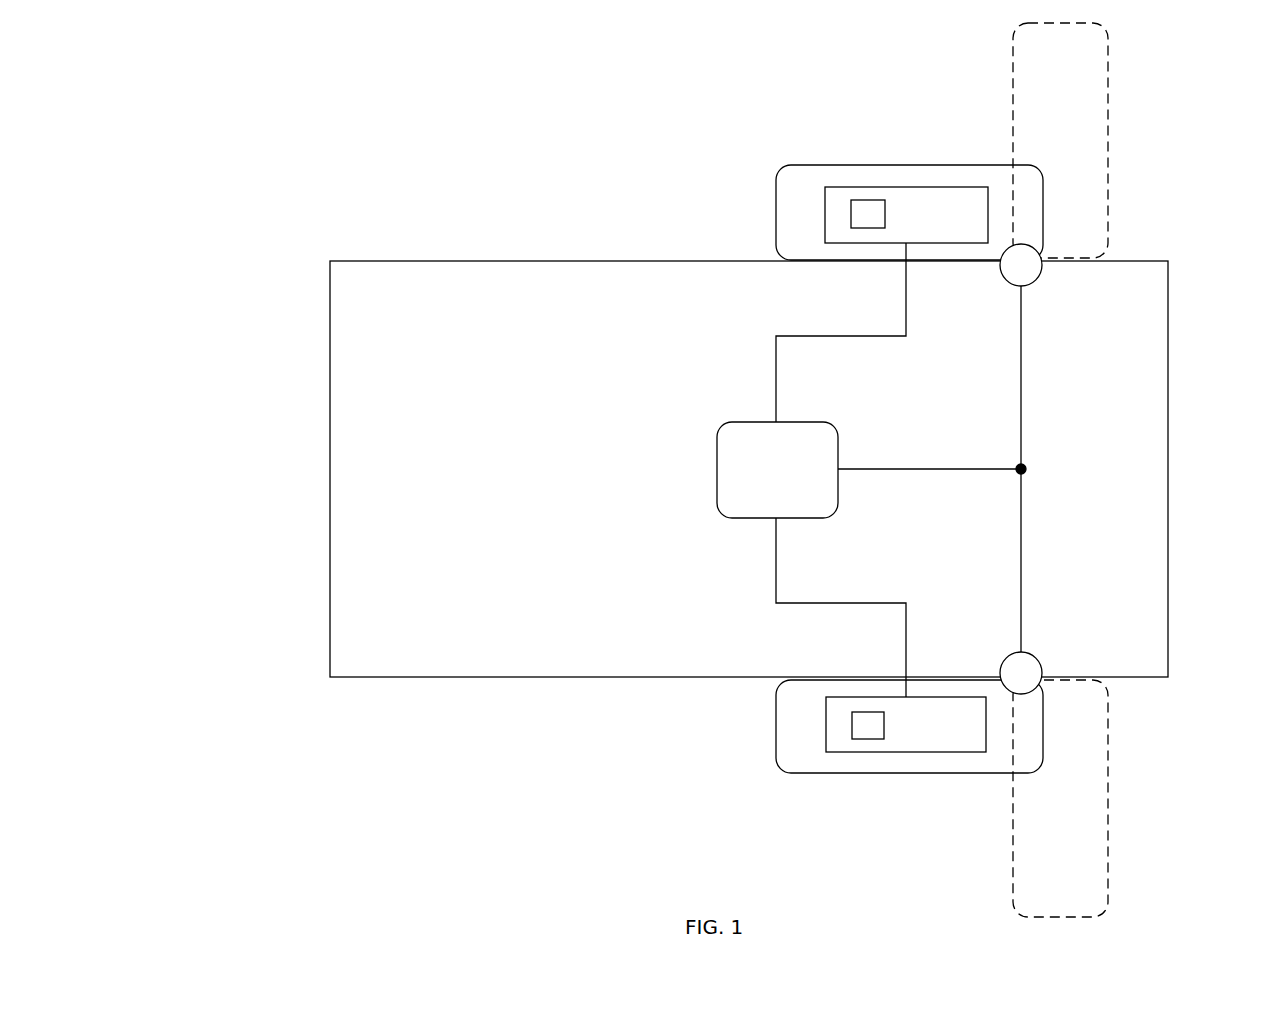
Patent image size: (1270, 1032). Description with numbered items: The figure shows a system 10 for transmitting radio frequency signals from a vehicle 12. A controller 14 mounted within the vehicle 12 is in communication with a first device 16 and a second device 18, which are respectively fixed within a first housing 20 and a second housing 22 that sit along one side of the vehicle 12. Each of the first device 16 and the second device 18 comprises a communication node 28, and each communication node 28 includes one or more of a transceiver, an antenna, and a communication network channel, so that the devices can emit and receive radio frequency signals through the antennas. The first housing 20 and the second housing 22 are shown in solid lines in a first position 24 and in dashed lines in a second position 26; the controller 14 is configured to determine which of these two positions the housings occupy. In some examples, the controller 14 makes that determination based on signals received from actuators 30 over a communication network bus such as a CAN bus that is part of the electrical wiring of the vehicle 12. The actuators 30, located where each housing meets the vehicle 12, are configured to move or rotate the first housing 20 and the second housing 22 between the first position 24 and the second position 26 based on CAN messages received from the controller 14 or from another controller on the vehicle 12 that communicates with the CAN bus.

The system 10 is at (338, 186).
The vehicle 12 is at (330, 406).
The controller 14 is at (717, 470).
The first device 16 is at (826, 228).
The second device 18 is at (826, 708).
The first housing 20 is at (948, 165).
The second housing 22 is at (945, 775).
The first position 24 is at (766, 159).
The second position 26 is at (1166, 77).
The communication node 28 is at (868, 200).
The actuator 30 is at (1038, 282).